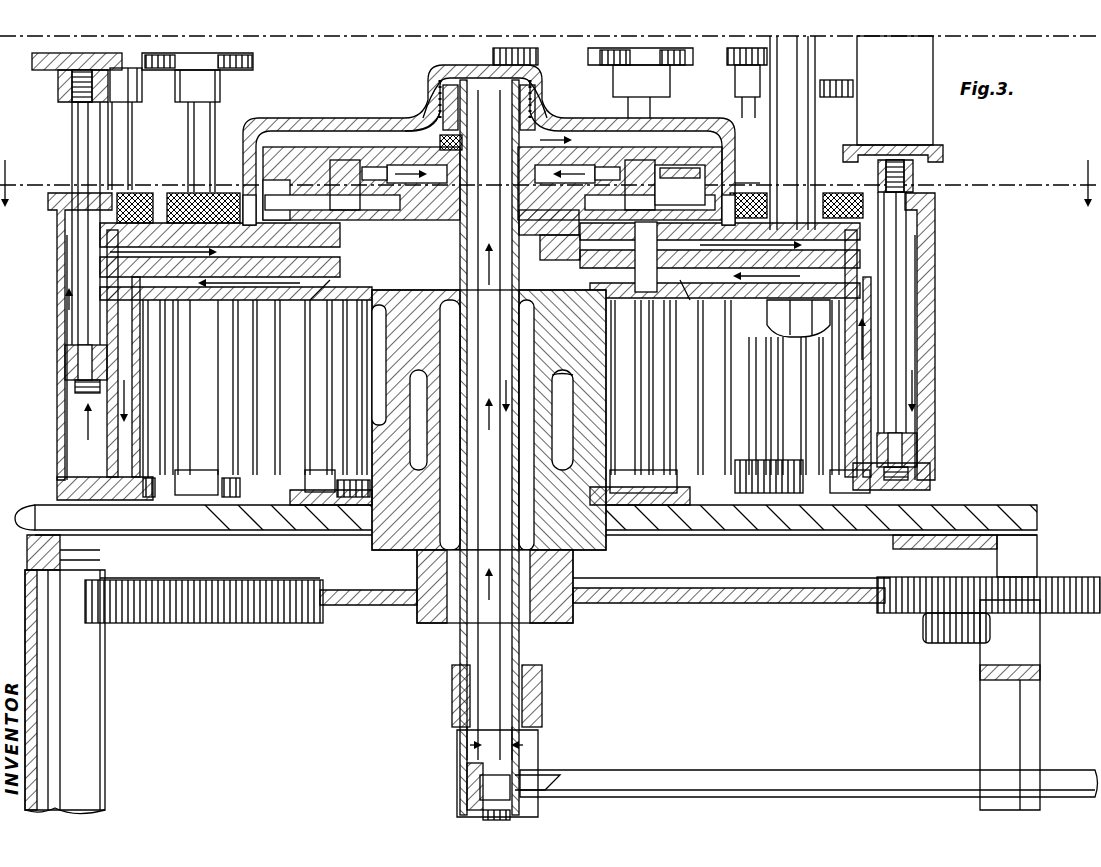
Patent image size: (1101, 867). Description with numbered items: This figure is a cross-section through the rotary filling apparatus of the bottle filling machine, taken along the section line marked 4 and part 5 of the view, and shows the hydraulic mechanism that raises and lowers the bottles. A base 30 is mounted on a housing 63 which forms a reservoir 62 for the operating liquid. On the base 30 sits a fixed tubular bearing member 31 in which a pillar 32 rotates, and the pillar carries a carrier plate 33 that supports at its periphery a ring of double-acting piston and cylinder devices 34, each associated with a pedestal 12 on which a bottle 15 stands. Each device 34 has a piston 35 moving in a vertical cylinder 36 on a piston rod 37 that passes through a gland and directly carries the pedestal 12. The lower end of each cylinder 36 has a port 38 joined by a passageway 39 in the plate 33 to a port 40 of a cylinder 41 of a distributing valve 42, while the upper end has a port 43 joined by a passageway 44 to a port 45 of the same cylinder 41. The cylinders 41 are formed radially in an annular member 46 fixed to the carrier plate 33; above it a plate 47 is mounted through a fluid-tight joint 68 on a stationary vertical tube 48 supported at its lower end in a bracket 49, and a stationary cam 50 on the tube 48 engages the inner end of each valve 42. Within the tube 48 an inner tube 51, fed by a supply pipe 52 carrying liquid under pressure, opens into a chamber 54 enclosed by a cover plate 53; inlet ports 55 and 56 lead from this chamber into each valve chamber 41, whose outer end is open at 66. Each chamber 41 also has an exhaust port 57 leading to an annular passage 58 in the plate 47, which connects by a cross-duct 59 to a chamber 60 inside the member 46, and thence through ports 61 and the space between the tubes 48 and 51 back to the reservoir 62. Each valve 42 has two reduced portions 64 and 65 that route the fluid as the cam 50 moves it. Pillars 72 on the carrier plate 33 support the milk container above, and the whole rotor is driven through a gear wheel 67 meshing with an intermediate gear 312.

The section line 4 is at (546, 173).
The studs 5 is at (230, 160).
The pedestal 12 is at (40, 62).
The bottle 15 is at (933, 50).
The base 30 is at (950, 515).
The fixed tubular bearing member 31 is at (580, 420).
The pillar 32 is at (572, 372).
The carrier plate 33 is at (477, 407).
The double-acting piston and cylinder device 34 is at (60, 405).
The piston 35 is at (65, 360).
The vertical cylinder 36 is at (80, 425).
The piston rod 37 is at (70, 120).
The port 38 is at (100, 470).
The passageway 39 is at (185, 285).
The port 40 is at (330, 300).
The cylinder of distributing valve 41 is at (748, 176).
The distributing valve 42 is at (562, 238).
The port 43 is at (135, 250).
The passageway 44 is at (162, 255).
The port 45 is at (678, 305).
The annular member 46 is at (680, 168).
The plate 47 is at (560, 150).
The stationary vertical tube 48 is at (535, 115).
The bracket 49 is at (542, 690).
The stationary cam 50 is at (549, 223).
The inner tube 51 is at (495, 670).
The supply pipe 52 is at (780, 772).
The cover plate 53 is at (530, 80).
The chamber 54 is at (420, 128).
The inlet port 55 is at (370, 175).
The inlet port 56 is at (300, 195).
The exhaust port 57 is at (340, 170).
The annular passage 58 is at (569, 137).
The cross-duct 59 is at (442, 138).
The chamber 60 is at (482, 387).
The port 61 is at (492, 425).
The reservoir 62 is at (475, 775).
The housing 63 is at (50, 657).
The reduced portion 64 is at (420, 162).
The reduced portion 65 is at (500, 304).
The open outer end 66 is at (282, 190).
The gear wheel 67 is at (290, 585).
The fluid-tight joint 68 is at (520, 115).
The pillar 72 is at (425, 100).
The intermediate gear 312 is at (1040, 578).